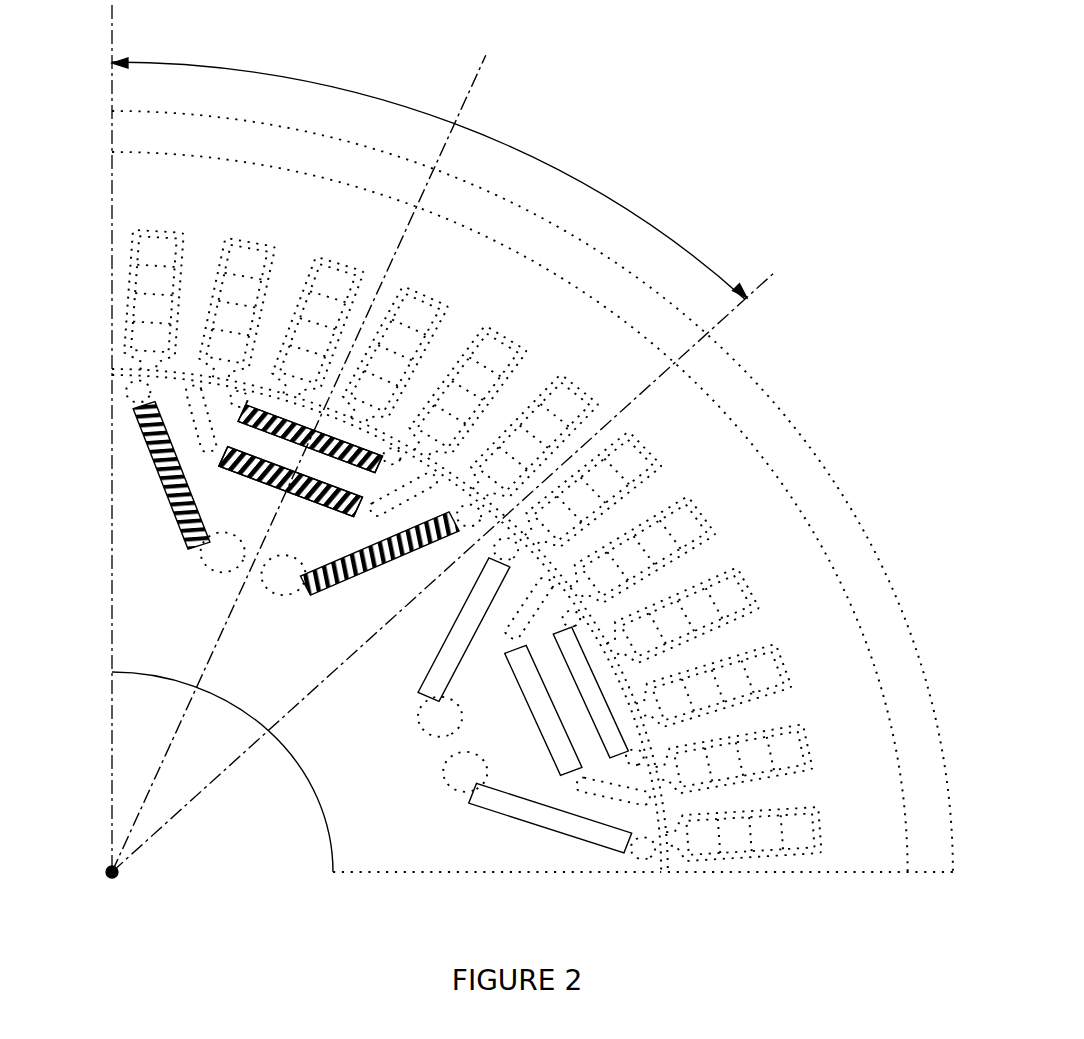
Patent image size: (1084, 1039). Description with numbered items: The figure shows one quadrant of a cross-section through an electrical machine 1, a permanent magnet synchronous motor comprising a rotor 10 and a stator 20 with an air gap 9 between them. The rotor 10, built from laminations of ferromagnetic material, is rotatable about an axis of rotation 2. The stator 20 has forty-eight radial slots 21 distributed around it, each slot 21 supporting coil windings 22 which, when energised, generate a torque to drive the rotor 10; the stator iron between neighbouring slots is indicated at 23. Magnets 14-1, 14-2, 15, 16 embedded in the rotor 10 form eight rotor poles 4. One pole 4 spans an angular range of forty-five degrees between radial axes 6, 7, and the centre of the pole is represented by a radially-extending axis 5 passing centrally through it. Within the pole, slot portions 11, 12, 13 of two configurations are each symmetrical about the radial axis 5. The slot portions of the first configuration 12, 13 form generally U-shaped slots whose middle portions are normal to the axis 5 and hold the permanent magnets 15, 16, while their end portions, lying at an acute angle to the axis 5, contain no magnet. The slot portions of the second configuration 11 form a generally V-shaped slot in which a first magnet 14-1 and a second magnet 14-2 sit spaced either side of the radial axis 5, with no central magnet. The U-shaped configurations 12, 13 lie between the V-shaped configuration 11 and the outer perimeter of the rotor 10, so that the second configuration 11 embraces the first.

The electrical machine 1 is at (652, 125).
The axis of rotation 2 is at (108, 866).
The rotor pole 4 is at (284, 72).
The radial axis 5 is at (468, 92).
The radial axis 6 is at (112, 57).
The radial axis 7 is at (760, 287).
The air gap 9 is at (664, 886).
The rotor 10 is at (471, 886).
The slot portions of the second configuration 11 is at (205, 560).
The slot portions of the first configuration 12 is at (248, 476).
The slot portions of the first configuration 13 is at (265, 438).
The first magnet 14-1 is at (165, 485).
The second magnet 14-2 is at (337, 585).
The permanent magnet 15 is at (310, 505).
The permanent magnet 16 is at (318, 448).
The stator 20 is at (792, 886).
The radial slot 21 is at (183, 247).
The coil windings 22 is at (160, 248).
The stator tooth 23 is at (290, 268).